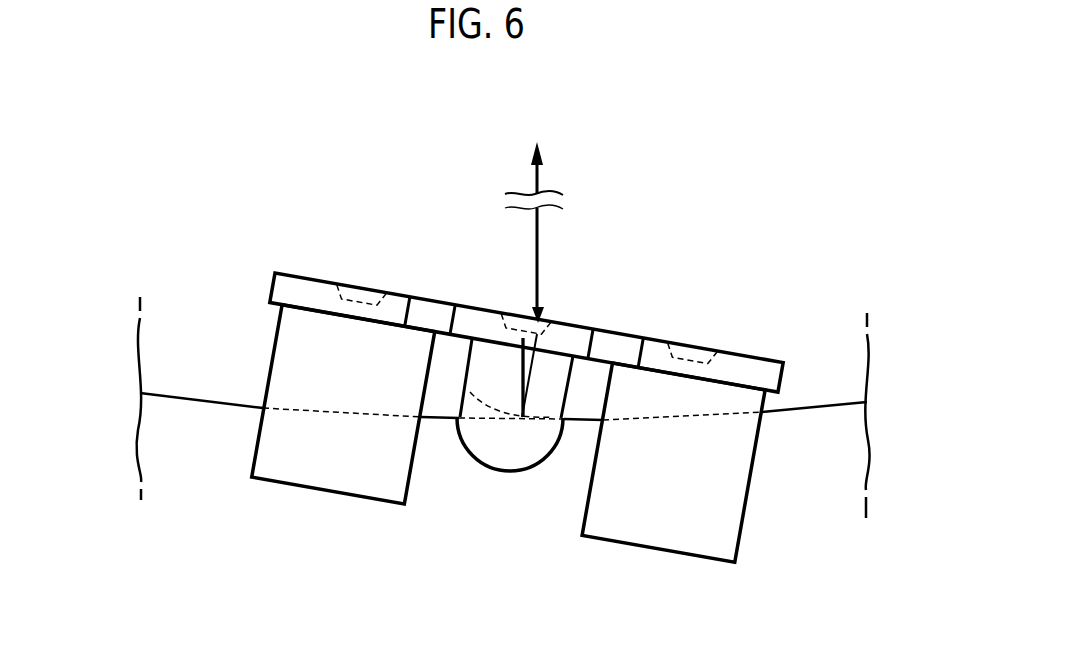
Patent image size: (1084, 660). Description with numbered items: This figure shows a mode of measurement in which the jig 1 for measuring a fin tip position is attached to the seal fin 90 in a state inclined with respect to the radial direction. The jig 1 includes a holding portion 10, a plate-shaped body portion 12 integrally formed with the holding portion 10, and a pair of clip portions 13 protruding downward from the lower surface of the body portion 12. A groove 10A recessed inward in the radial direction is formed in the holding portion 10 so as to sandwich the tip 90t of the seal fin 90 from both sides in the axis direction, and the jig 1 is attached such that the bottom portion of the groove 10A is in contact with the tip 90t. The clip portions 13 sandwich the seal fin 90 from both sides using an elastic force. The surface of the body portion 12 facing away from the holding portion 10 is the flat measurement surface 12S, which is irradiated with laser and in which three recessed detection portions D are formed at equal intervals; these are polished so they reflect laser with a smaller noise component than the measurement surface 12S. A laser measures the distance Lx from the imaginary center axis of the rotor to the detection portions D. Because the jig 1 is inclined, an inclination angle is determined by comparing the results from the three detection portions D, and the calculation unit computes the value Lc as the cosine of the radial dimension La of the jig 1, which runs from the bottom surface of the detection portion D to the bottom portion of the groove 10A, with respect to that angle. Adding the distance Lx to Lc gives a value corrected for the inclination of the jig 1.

The jig 1 is at (311, 250).
The seal fin 90 is at (178, 415).
The tip of the seal fin 90t is at (218, 400).
The body portion 12 is at (752, 360).
The measurement surface 12S is at (655, 342).
The clip portion 13 is at (297, 470).
The holding portion 10 is at (517, 463).
The groove 10A is at (483, 405).
The detection portion D is at (510, 315).
The cosine-corrected dimension Lc is at (523, 360).
The dimension of the jig in the radial direction La is at (533, 367).
The distance from the axis to the detection portions Lx is at (538, 235).